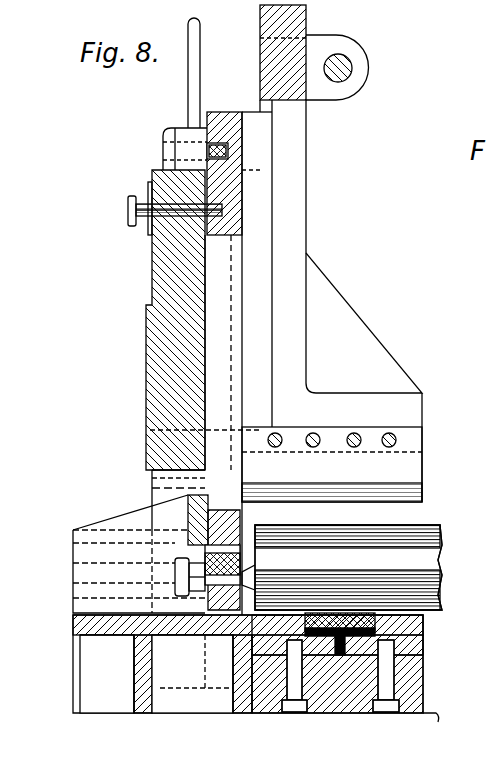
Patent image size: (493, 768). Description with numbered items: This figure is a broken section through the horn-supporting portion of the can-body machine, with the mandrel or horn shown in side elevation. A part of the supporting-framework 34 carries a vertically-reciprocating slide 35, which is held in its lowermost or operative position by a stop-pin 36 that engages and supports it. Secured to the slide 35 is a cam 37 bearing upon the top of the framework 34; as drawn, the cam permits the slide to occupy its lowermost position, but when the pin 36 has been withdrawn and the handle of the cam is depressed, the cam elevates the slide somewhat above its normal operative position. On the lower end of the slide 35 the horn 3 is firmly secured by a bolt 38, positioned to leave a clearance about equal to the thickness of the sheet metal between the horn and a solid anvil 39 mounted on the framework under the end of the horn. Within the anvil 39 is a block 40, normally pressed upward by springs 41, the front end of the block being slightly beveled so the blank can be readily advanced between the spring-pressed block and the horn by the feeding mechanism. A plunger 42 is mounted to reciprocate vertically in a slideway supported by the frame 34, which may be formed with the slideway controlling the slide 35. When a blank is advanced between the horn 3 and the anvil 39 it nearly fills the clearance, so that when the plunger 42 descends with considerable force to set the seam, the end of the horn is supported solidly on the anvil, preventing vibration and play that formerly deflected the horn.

The horn 3 is at (416, 530).
The supporting-framework 34 is at (150, 276).
The vertically-reciprocating slide 35 is at (224, 118).
The stop-pin 36 is at (128, 210).
The cam 37 is at (188, 128).
The bolt 38 is at (180, 575).
The anvil 39 is at (412, 640).
The block 40 is at (262, 632).
The springs 41 is at (243, 413).
The plunger 42 is at (415, 440).